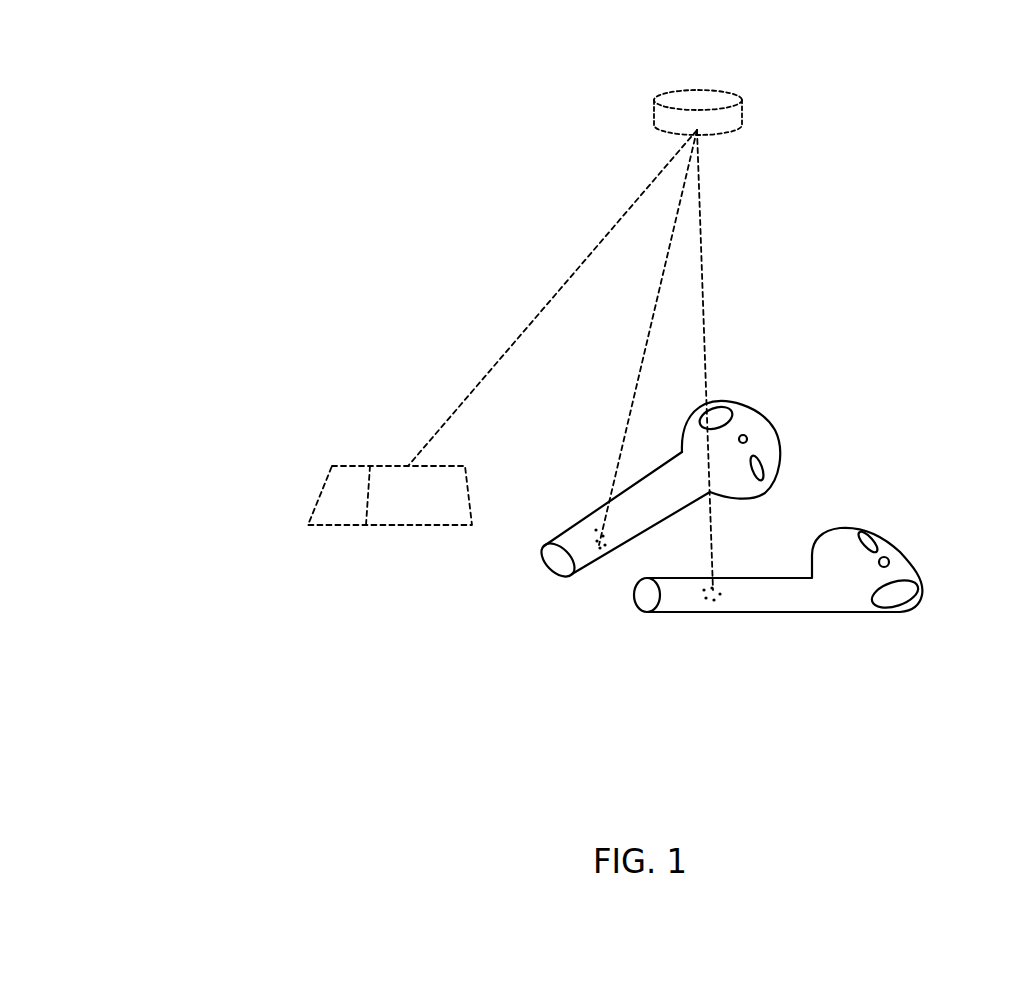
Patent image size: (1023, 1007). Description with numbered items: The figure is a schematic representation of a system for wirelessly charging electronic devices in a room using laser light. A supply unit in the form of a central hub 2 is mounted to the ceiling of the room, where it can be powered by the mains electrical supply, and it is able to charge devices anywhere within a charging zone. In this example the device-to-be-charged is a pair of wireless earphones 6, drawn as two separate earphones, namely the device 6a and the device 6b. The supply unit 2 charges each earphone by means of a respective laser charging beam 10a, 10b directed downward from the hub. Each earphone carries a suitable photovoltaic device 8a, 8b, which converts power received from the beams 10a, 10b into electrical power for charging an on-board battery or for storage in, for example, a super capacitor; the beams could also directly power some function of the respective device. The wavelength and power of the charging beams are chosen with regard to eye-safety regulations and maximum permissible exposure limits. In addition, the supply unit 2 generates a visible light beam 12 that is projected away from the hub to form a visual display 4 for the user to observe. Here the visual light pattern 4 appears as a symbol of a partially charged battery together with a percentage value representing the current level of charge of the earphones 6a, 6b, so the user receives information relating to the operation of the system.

The supply unit 2 is at (667, 90).
The visual display 4 is at (327, 478).
The pair of wireless earphones 6 is at (843, 450).
The device 6a is at (775, 442).
The device 6b is at (907, 553).
The photovoltaic device 8a is at (600, 533).
The photovoltaic device 8b is at (730, 593).
The laser charging beam 10a is at (632, 373).
The laser charging beam 10b is at (702, 272).
The visible light beam 12 is at (556, 292).